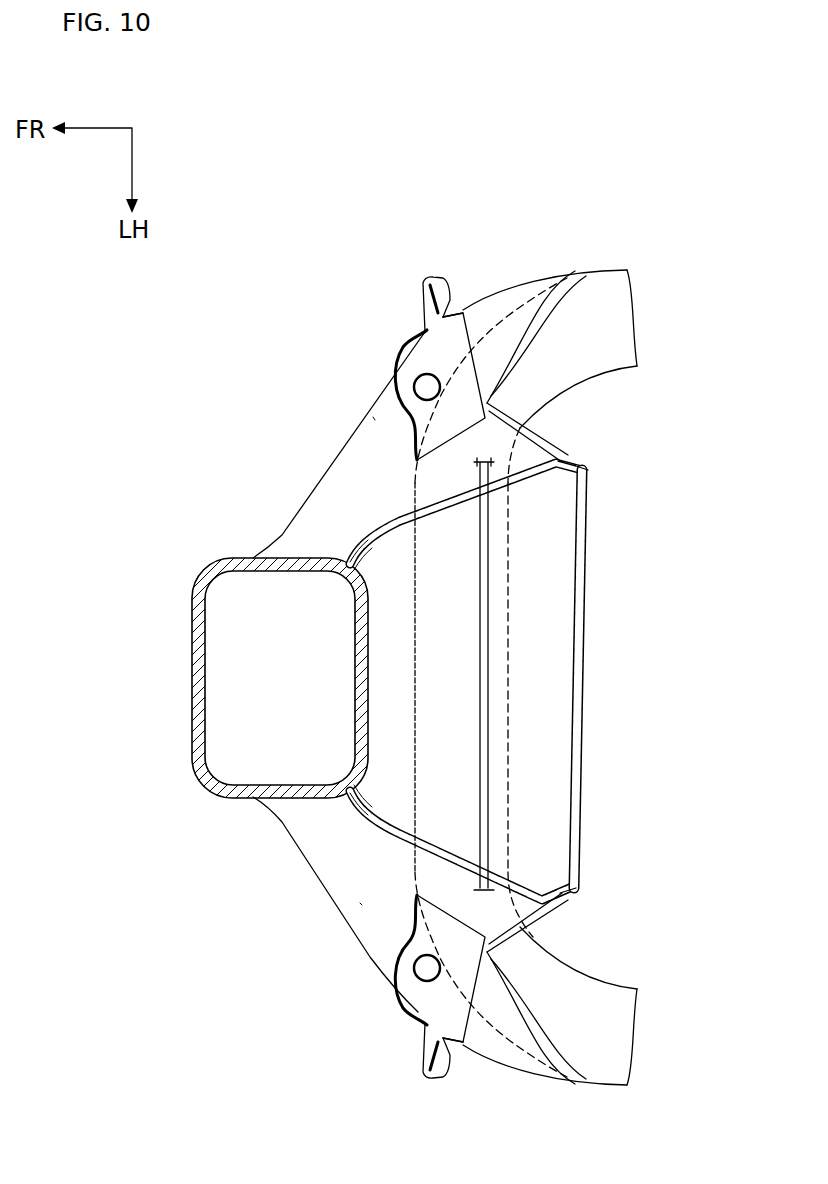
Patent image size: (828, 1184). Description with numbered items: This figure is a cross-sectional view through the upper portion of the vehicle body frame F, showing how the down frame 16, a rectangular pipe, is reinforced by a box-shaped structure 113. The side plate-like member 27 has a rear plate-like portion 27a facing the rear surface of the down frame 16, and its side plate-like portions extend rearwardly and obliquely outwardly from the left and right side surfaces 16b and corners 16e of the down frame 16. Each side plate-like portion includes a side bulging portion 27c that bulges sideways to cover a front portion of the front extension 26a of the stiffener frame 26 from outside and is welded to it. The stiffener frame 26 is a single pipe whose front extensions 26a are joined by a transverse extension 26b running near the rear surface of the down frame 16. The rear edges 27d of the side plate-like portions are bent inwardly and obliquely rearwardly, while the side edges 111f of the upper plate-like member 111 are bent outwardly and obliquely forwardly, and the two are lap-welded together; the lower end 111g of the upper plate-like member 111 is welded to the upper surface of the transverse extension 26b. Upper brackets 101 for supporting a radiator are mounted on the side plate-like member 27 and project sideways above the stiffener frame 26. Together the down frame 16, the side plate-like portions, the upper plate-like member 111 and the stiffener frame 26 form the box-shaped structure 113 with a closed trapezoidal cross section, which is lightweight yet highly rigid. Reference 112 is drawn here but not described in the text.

The down frame 16 is at (187, 650).
The side surface of the down frame 16b is at (283, 556).
The corner of the down frame 16e is at (360, 578).
The stiffener frame 26 is at (599, 285).
The front extension 26a is at (600, 355).
The transverse extension 26b is at (465, 603).
The side plate-like member 27 is at (338, 442).
The rear plate-like portion 27a is at (311, 504).
The side bulging portion 27c is at (373, 415).
The rear edge 27d is at (570, 447).
The upper bracket 101 is at (418, 348).
The upper plate-like member 111 is at (592, 678).
The side edge of the upper plate-like member 111f is at (578, 494).
The lower end of the upper plate-like member 111g is at (466, 716).
The panel inner surface 112 is at (530, 817).
The box-shaped structure 113 is at (586, 790).
The vehicle body frame F is at (173, 772).